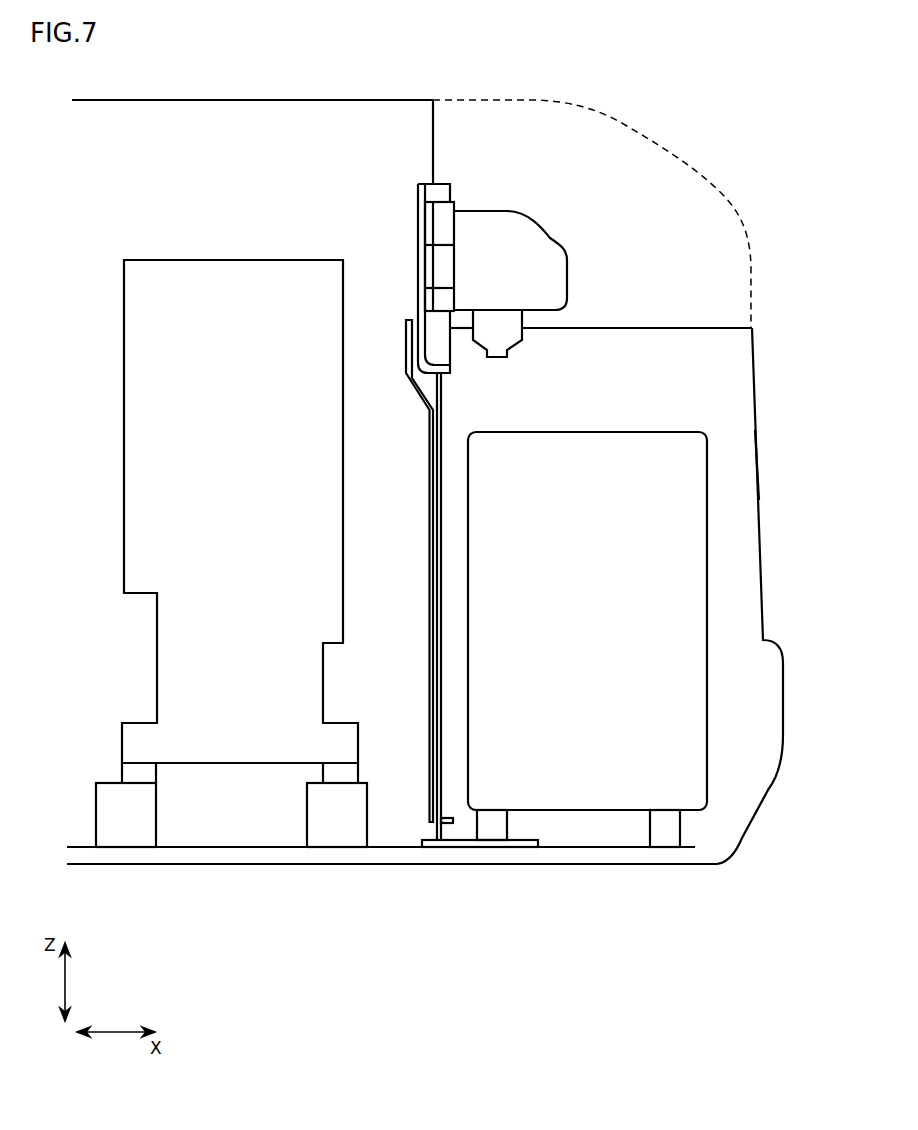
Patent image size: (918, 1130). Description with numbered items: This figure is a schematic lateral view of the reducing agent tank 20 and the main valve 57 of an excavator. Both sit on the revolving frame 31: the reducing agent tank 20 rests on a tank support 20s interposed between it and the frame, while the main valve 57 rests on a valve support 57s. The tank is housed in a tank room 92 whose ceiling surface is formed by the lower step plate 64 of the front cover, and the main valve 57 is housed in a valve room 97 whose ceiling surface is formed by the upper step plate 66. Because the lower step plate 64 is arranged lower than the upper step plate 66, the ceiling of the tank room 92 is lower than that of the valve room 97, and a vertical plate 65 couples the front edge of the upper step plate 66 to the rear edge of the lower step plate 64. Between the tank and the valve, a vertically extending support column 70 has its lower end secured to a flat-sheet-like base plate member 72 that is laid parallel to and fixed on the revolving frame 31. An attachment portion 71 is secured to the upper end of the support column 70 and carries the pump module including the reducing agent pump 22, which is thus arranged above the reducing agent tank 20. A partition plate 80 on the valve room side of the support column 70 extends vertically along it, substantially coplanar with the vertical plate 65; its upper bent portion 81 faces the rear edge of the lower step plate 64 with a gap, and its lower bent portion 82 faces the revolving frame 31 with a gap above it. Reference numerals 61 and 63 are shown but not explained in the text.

The valve room 97 is at (190, 143).
The upper step plate 66 is at (295, 100).
The vertical plate 65 is at (434, 133).
The housing cover 61 is at (620, 122).
The lower step plate 64 is at (700, 328).
The side wall 63 is at (757, 390).
The tank room 92 is at (737, 463).
The bent portion 81 is at (405, 345).
The attachment portion 71 is at (420, 228).
The reducing agent pump 22 is at (497, 240).
The partition plate 80 is at (433, 751).
The support column 70 is at (438, 760).
The base plate member 72 is at (430, 843).
The bent portion 82 is at (447, 823).
The reducing agent tank 20 is at (580, 755).
The tank support 20s is at (492, 830).
The main valve 57 is at (240, 670).
The valve support 57s is at (123, 826).
The revolving frame 31 is at (345, 857).